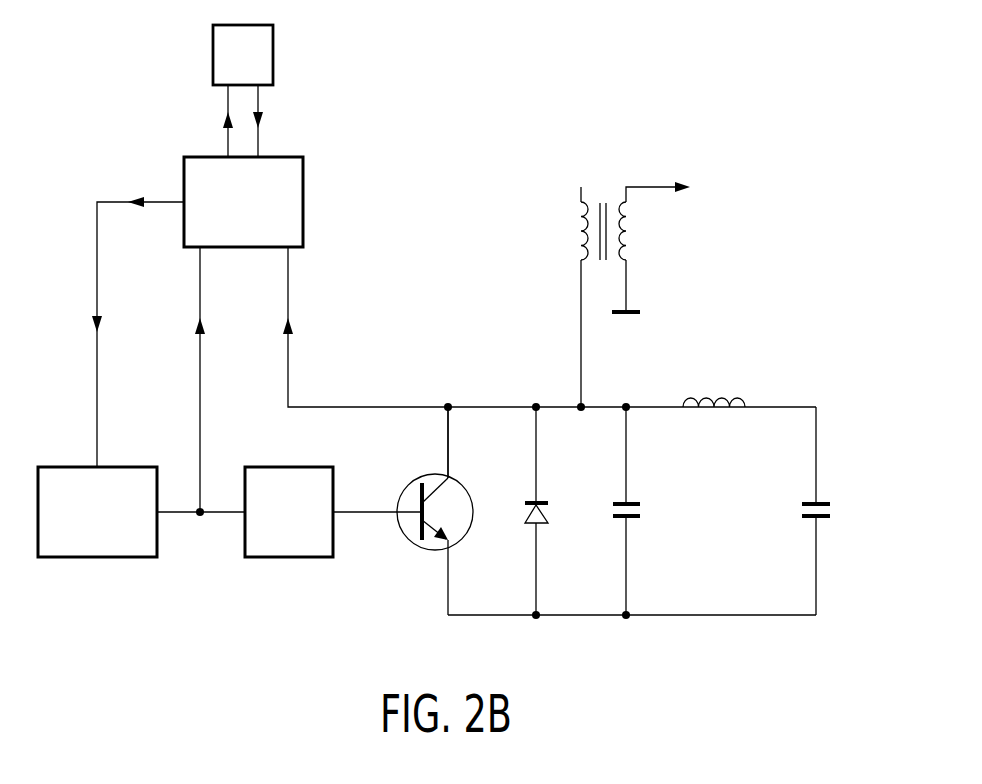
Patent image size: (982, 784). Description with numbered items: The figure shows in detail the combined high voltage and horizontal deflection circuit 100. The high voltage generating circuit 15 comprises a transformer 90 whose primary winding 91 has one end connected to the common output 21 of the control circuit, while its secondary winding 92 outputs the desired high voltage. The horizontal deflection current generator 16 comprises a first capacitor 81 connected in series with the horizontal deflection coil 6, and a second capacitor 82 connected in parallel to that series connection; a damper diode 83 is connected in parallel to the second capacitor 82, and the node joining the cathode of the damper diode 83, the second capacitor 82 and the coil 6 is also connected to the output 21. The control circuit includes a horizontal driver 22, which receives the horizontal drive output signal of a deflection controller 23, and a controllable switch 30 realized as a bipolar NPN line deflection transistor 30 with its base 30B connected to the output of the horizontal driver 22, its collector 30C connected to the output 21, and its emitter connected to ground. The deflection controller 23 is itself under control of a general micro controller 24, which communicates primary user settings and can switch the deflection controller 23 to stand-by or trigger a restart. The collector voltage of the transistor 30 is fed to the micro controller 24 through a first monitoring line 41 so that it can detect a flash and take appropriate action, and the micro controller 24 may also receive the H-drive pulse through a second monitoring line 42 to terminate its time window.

The horizontal deflection coil 6 is at (719, 412).
The high voltage generating circuit 15 is at (609, 242).
The horizontal deflection current generator 16 is at (658, 377).
The output of the control circuit 21 is at (626, 393).
The horizontal driver 22 is at (283, 557).
The deflection controller 23 is at (102, 557).
The general micro controller 24 is at (303, 203).
The controllable switch 30 is at (425, 550).
The control input 30B is at (377, 498).
The output terminal 30C is at (472, 442).
The first monitoring line 41 is at (288, 307).
The second monitoring line 42 is at (200, 307).
The first capacitor 81 is at (800, 509).
The second capacitor 82 is at (640, 512).
The damper diode 83 is at (548, 525).
The transformer 90 is at (604, 200).
The primary winding 91 is at (578, 241).
The secondary winding 92 is at (628, 242).
The combined high voltage and horizontal deflection circuit 100 is at (760, 300).